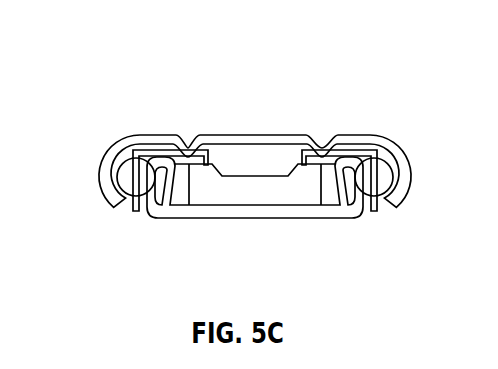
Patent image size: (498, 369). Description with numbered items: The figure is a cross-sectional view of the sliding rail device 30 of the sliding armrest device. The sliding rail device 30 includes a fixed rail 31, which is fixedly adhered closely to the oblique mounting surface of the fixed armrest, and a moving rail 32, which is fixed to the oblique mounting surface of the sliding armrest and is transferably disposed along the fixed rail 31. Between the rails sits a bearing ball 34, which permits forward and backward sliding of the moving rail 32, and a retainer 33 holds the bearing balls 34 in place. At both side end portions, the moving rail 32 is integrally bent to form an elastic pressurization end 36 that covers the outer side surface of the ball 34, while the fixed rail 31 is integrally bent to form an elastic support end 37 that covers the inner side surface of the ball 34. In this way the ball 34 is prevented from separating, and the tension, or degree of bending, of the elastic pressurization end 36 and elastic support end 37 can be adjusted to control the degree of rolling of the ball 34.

The sliding rail device 30 is at (222, 106).
The fixed rail 31 is at (233, 215).
The moving rail 32 is at (275, 138).
The retainer 33 is at (126, 160).
The bearing ball 34 is at (125, 172).
The elastic pressurization end 36 is at (402, 163).
The elastic support end 37 is at (340, 185).